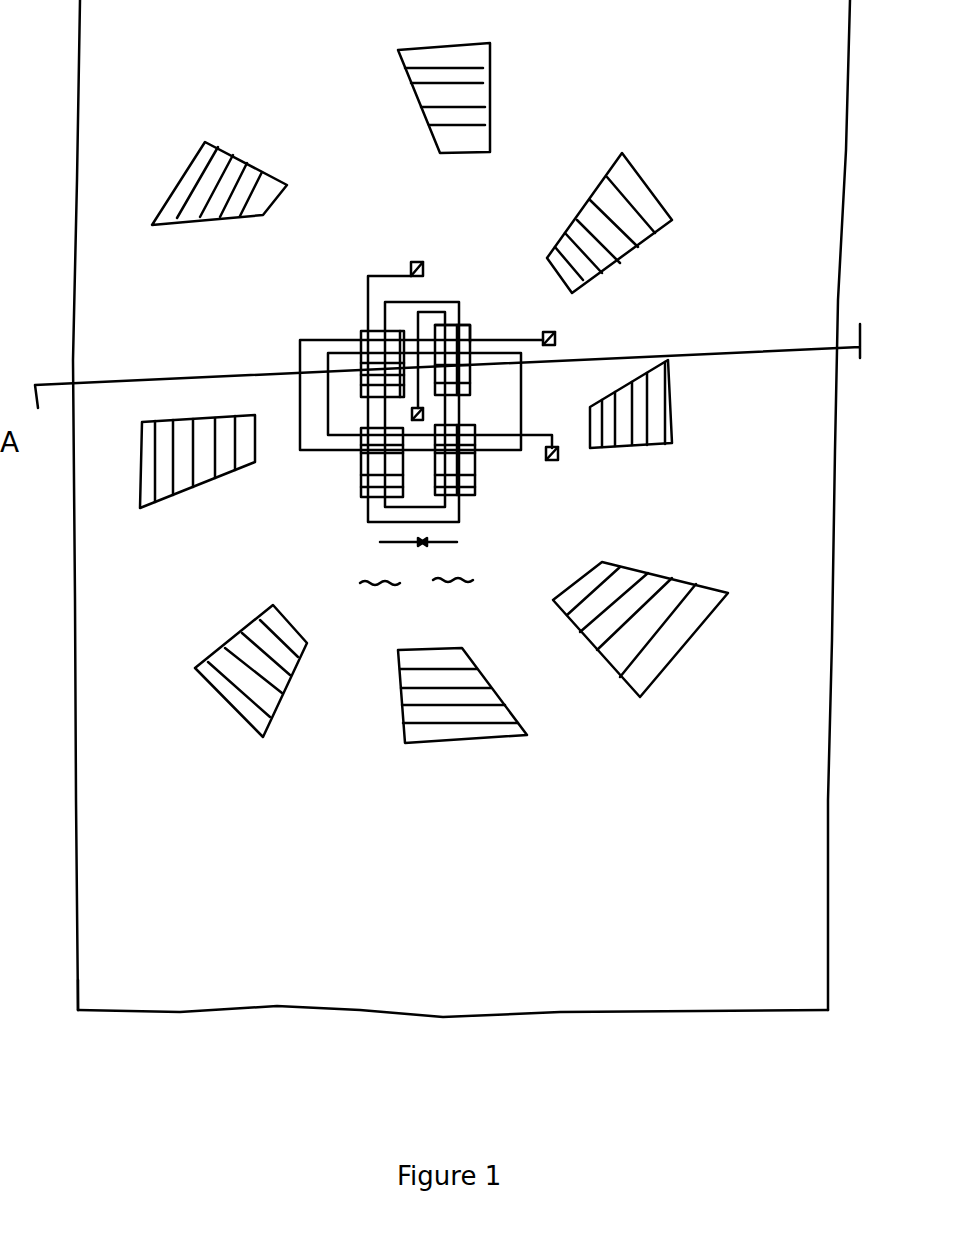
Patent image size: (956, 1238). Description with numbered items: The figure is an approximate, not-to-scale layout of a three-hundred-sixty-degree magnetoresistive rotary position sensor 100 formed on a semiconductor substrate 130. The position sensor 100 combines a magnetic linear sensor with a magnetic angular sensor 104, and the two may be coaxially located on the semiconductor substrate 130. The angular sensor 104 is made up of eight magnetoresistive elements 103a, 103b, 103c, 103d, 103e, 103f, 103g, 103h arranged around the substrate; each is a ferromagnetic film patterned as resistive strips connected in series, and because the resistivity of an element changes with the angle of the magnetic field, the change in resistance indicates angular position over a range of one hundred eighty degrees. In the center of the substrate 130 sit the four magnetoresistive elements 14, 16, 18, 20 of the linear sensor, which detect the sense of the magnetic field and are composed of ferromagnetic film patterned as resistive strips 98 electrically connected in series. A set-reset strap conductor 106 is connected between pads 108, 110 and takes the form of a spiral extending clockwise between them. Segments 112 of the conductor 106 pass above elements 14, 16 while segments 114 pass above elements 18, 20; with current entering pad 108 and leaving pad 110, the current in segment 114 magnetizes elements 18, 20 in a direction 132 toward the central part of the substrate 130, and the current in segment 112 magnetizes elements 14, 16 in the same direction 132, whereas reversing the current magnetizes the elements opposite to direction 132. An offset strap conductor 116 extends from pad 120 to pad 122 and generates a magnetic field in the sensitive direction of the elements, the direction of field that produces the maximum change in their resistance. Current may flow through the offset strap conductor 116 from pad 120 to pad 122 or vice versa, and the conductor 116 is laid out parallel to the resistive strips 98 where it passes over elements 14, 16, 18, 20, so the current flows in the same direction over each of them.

The rotary position sensor 100 is at (447, 1040).
The magnetic angular sensor 104 is at (653, 147).
The semiconductor substrate 130 is at (455, 967).
The magnetoresistive element 103a is at (444, 80).
The magnetoresistive element 103b is at (626, 223).
The magnetoresistive element 103c is at (662, 404).
The magnetoresistive element 103d is at (649, 629).
The magnetoresistive element 103e is at (462, 716).
The magnetoresistive element 103f is at (247, 680).
The magnetoresistive element 103g is at (166, 461).
The magnetoresistive element 103h is at (202, 183).
The set-reset strap conductor 106 is at (452, 298).
The pad 108 is at (434, 415).
The pad 110 is at (438, 269).
The offset strap conductor 116 is at (305, 467).
The pad 120 is at (569, 339).
The pad 122 is at (554, 466).
The magnetoresistive element 14 is at (361, 375).
The magnetoresistive element 16 is at (361, 485).
The magnetoresistive element 18 is at (470, 368).
The magnetoresistive element 20 is at (475, 482).
The resistive strips 98 is at (467, 342).
The direction 132 is at (418, 554).
The segments 112 is at (380, 595).
The segments 114 is at (454, 594).